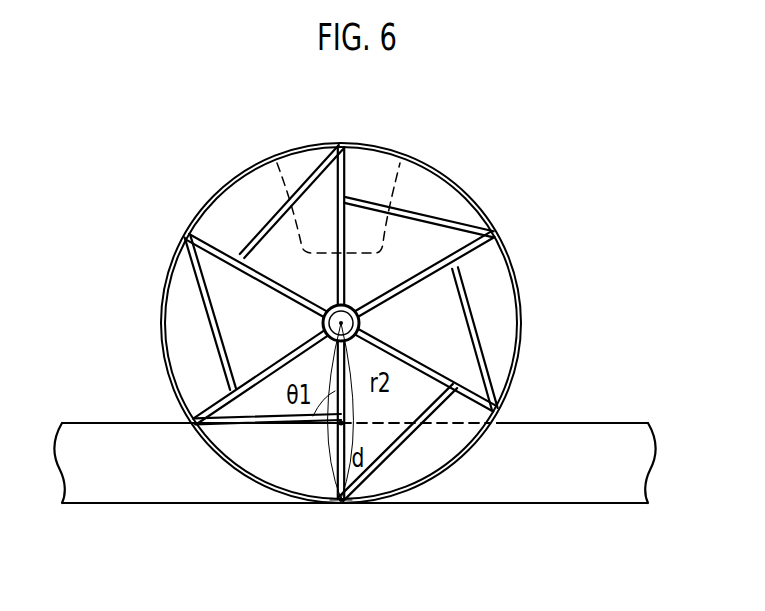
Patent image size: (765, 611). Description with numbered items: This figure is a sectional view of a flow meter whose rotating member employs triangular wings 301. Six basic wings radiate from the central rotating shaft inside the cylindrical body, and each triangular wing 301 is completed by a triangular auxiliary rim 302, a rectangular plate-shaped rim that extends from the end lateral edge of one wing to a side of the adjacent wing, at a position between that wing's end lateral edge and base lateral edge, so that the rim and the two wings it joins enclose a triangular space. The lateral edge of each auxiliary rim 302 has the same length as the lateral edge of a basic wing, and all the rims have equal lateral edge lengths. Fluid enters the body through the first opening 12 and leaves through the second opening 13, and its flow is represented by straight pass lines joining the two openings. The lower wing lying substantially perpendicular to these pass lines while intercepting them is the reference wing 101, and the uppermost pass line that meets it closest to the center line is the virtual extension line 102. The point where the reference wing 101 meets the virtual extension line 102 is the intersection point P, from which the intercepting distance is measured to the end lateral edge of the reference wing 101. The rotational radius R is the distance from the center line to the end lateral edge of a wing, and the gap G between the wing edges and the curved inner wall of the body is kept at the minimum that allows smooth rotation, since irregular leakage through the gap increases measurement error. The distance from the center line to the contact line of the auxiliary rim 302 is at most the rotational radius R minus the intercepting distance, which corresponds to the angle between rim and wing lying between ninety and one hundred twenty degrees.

The triangular wing 301 is at (343, 178).
The triangular auxiliary rim 302 is at (478, 337).
The reference wing 101 is at (343, 503).
The virtual extension line 102 is at (443, 425).
The first opening 12 is at (108, 485).
The second opening 13 is at (575, 488).
The gap G is at (500, 415).
The intersection point P is at (322, 423).
The rotational radius R is at (326, 449).